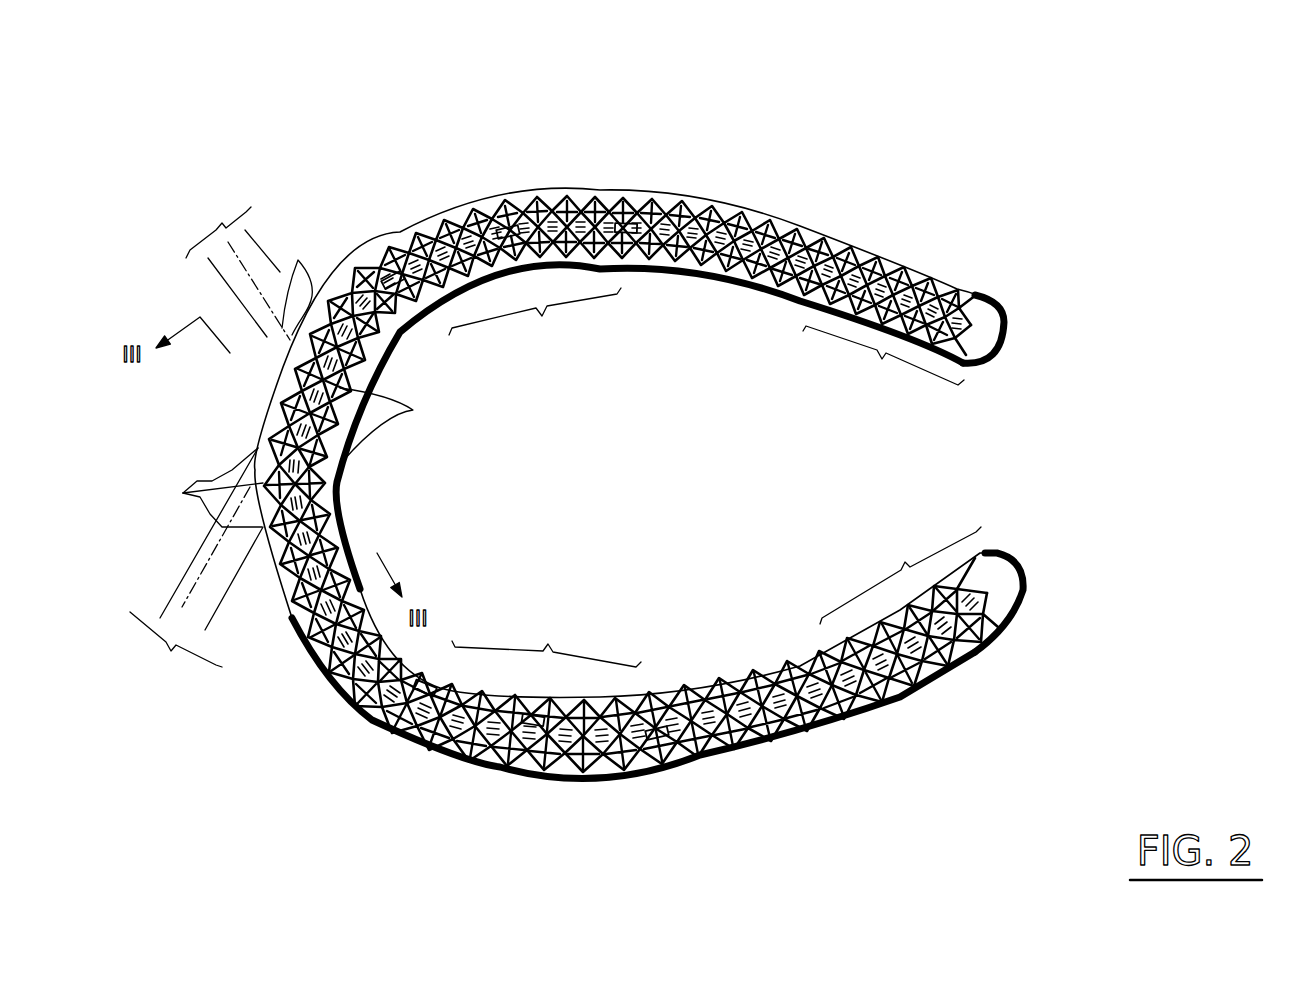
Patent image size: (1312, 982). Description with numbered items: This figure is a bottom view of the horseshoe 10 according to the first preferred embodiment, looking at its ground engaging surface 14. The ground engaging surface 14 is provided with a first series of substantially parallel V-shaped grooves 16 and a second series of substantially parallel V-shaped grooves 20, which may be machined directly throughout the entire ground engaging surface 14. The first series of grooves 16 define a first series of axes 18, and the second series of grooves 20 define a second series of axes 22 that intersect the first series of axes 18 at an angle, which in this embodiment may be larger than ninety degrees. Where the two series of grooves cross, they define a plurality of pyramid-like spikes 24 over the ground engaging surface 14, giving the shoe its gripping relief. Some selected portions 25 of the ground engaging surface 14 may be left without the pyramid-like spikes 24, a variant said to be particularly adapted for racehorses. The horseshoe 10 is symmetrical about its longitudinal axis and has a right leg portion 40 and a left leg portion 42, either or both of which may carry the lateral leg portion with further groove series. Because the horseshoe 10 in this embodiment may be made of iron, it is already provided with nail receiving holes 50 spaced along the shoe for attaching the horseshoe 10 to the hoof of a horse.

The horseshoe 10 is at (328, 132).
The ground engaging surface 14 is at (443, 665).
The first series of substantially parallel V-shaped grooves 16 is at (295, 280).
The first series of axes 18 is at (235, 264).
The second series of substantially parallel V-shaped grooves 20 is at (206, 487).
The second series of axes 22 is at (196, 568).
The pyramid-like spikes 24 is at (395, 424).
The selected portions 25 is at (715, 477).
The right leg portion 40 is at (1028, 586).
The left leg portion 42 is at (1006, 321).
The nail receiving holes 50 is at (397, 270).